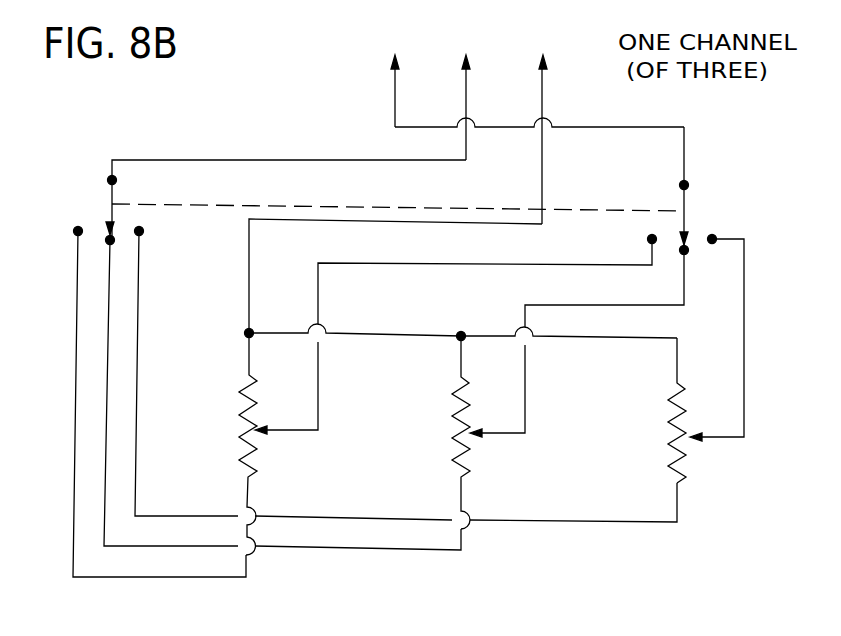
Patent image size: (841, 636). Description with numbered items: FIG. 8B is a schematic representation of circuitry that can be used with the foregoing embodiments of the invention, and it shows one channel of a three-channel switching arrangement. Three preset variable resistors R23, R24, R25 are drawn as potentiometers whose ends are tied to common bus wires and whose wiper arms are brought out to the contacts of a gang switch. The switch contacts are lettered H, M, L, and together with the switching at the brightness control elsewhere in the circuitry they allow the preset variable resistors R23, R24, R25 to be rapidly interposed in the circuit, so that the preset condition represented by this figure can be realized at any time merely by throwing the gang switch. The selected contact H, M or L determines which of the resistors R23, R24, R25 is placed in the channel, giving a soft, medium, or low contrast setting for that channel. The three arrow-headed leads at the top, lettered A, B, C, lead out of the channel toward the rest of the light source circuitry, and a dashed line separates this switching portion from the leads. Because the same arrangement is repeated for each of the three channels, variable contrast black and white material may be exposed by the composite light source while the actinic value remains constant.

The preset variable resistor R23 is at (219, 444).
The preset variable resistor R24 is at (436, 432).
The preset variable resistor R25 is at (654, 410).
The output terminal A is at (395, 77).
The output terminal B is at (466, 94).
The output terminal C is at (543, 126).
The terminal H is at (487, 269).
The terminal L is at (717, 328).
The terminal M is at (696, 267).